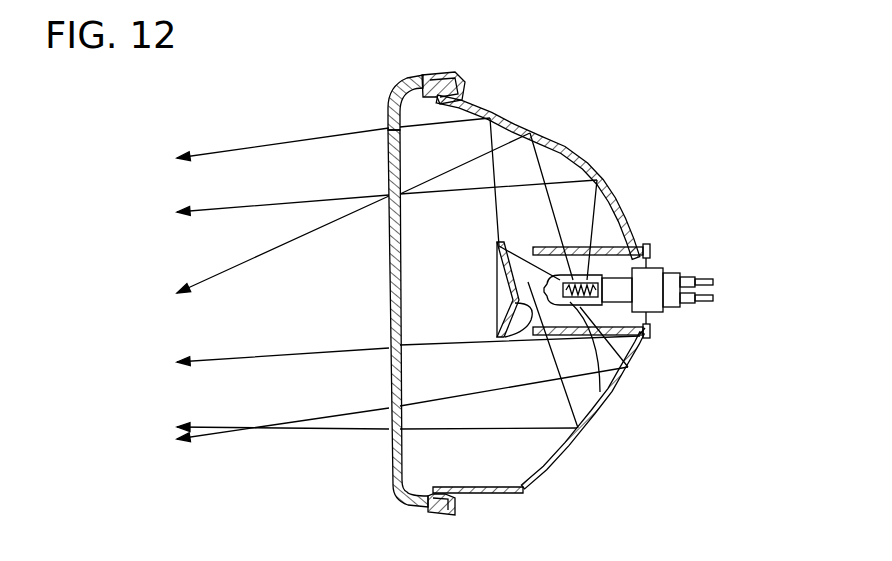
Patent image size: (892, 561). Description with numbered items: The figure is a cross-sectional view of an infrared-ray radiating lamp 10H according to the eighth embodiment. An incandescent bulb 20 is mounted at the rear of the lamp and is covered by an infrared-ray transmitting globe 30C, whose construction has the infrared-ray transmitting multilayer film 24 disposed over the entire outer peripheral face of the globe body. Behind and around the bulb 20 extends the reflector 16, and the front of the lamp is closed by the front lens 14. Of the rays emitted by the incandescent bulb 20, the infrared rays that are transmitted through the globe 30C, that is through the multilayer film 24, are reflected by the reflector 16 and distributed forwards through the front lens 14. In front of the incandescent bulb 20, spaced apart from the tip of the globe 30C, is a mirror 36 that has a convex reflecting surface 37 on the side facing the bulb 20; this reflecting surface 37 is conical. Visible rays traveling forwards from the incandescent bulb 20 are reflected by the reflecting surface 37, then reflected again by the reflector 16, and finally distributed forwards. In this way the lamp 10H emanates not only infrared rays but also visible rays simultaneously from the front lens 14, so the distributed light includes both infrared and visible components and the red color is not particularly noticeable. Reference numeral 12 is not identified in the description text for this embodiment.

The reflector 12 is at (604, 243).
The front lens 14 is at (388, 119).
The reflector 16 is at (570, 158).
The incandescent bulb 20 is at (627, 362).
The infrared-ray transmitting multilayer film 24 is at (593, 408).
The infrared-ray transmitting globe 30C is at (633, 210).
The mirror 36 is at (492, 262).
The reflecting surface 37 is at (497, 326).
The infrared-ray radiating lamp 10H is at (383, 172).